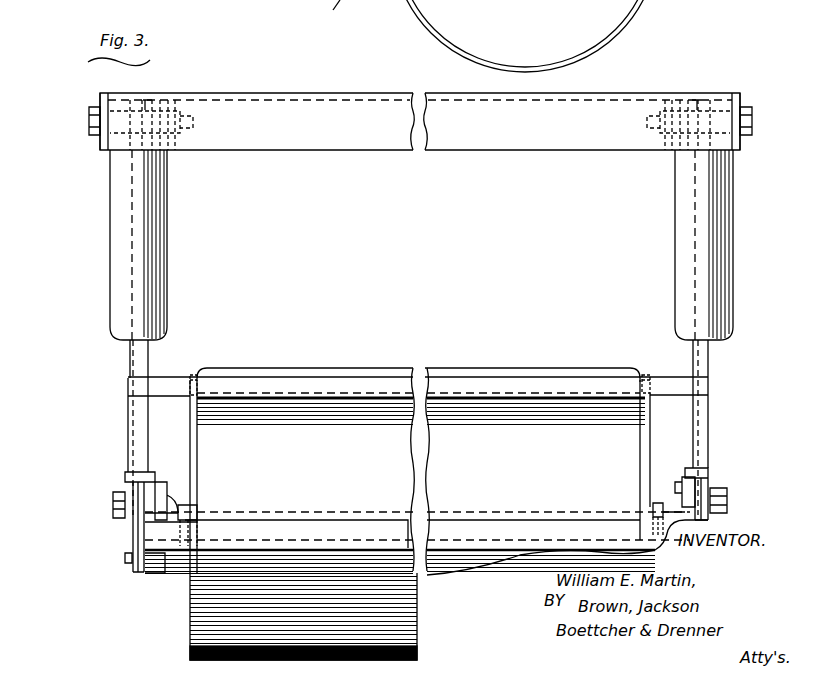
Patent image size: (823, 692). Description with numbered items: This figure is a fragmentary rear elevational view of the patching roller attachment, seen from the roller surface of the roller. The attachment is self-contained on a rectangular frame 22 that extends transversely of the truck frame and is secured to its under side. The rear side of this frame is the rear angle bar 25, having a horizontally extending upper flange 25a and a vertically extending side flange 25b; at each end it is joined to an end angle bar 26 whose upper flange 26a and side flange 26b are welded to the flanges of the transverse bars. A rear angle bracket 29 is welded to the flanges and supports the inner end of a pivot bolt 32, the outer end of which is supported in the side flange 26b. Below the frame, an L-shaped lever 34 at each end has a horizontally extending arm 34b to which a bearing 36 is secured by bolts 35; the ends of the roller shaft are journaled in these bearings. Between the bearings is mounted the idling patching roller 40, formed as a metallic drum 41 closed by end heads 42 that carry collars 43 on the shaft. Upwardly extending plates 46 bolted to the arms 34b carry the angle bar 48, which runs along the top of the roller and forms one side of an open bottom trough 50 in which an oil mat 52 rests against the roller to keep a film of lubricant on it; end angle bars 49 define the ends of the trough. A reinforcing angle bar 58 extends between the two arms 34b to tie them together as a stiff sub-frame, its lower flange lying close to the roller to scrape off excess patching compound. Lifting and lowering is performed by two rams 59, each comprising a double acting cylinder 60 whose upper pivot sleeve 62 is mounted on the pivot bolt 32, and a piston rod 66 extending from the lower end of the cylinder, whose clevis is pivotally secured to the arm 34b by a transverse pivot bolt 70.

The rectangular frame 22 is at (391, 90).
The rear angle bar 25 is at (280, 93).
The upper flange 25a is at (360, 98).
The side flange 25b is at (358, 135).
The end angle bar 26 is at (100, 93).
The upper flange 26a is at (136, 100).
The side flange 26b is at (104, 150).
The rear angle bracket 29 is at (170, 152).
The pivot bolt 32 is at (89, 121).
The L-shaped lever 34 is at (135, 205).
The horizontally extending arm 34b is at (98, 546).
The bolt 35 is at (106, 576).
The bearing 36 is at (163, 500).
The patching roller 40 is at (185, 650).
The metallic drum 41 is at (417, 655).
The end head 42 is at (190, 605).
The collar 43 is at (195, 504).
The upwardly extending plate 46 is at (128, 437).
The angle bar 48 is at (162, 388).
The end angle bar 49 is at (197, 378).
The open bottom trough 50 is at (282, 376).
The oil mat 52 is at (362, 376).
The reinforcing angle bar 58 is at (325, 535).
The hydraulic cylinder and piston ram 59 is at (178, 296).
The cylinder 60 is at (120, 246).
The pivot sleeve 62 is at (143, 104).
The piston rod 66 is at (130, 355).
The pivot bolt 70 is at (113, 508).